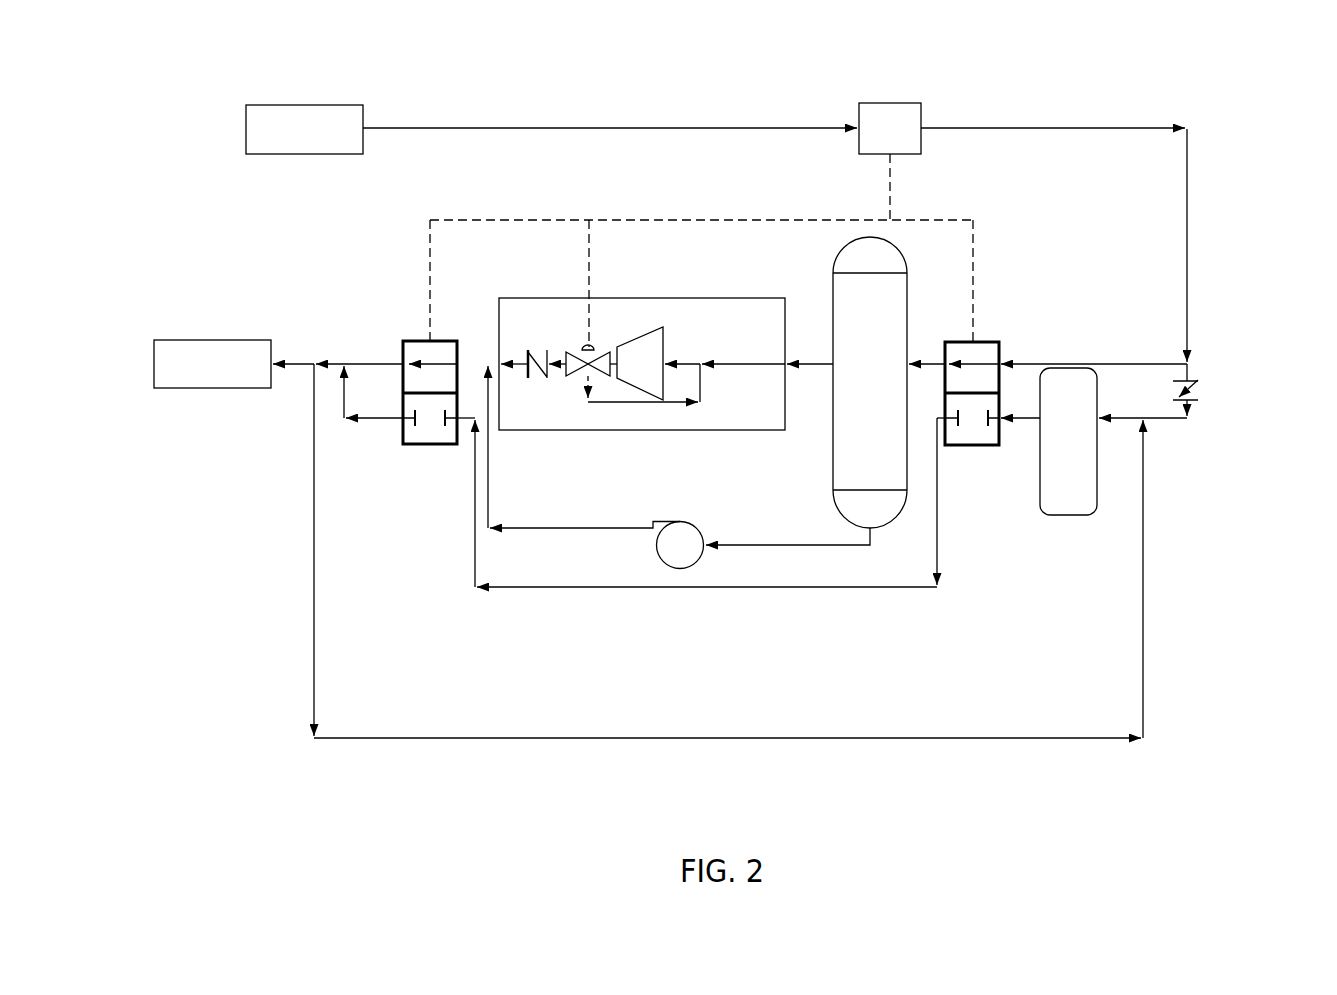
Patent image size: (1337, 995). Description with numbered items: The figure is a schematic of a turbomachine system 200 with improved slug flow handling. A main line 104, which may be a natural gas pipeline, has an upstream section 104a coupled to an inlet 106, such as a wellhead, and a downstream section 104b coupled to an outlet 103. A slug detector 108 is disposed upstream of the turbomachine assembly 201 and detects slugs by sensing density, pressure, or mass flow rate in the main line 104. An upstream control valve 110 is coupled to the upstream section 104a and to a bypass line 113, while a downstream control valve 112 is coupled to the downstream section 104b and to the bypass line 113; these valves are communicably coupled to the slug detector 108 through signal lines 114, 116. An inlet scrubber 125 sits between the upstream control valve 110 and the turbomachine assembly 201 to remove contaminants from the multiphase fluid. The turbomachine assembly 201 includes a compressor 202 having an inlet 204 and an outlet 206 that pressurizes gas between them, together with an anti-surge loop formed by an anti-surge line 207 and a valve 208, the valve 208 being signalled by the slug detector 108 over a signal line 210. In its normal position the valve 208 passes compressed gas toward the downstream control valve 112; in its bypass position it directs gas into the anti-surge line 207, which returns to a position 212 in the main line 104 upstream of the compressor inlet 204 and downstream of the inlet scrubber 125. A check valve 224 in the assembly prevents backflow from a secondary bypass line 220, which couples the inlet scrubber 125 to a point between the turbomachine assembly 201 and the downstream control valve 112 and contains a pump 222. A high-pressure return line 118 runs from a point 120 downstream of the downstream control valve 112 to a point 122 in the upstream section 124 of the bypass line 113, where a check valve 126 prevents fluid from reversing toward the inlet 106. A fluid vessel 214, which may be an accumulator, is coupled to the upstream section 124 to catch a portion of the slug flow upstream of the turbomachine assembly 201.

The turbomachine system 200 is at (243, 62).
The outlet 103 is at (226, 376).
The main line 104 is at (565, 128).
The upstream section 104a is at (1187, 283).
The downstream section 104b is at (292, 362).
The inlet 106 is at (318, 140).
The slug detector 108 is at (904, 140).
The upstream control valve 110 is at (972, 445).
The downstream control valve 112 is at (418, 445).
The bypass line 113 is at (693, 587).
The signal line 114 is at (430, 278).
The signal line 116 is at (947, 218).
The high-pressure return line 118 is at (748, 739).
The point 120 is at (316, 362).
The point 122 is at (1158, 419).
The upstream section of the bypass line 124 is at (1180, 419).
The inlet scrubber 125 is at (884, 376).
The check valve 126 is at (1200, 392).
The turbomachine assembly 201 is at (660, 430).
The compressor 202 is at (654, 376).
The inlet 204 is at (667, 360).
The outlet 206 is at (617, 358).
The anti-surge line 207 is at (613, 404).
The valve 208 is at (567, 368).
The signal line 210 is at (589, 278).
The position 212 is at (707, 368).
The fluid vessel 214 is at (1082, 452).
The secondary bypass line 220 is at (750, 547).
The pump 222 is at (702, 535).
The check valve 224 is at (548, 352).